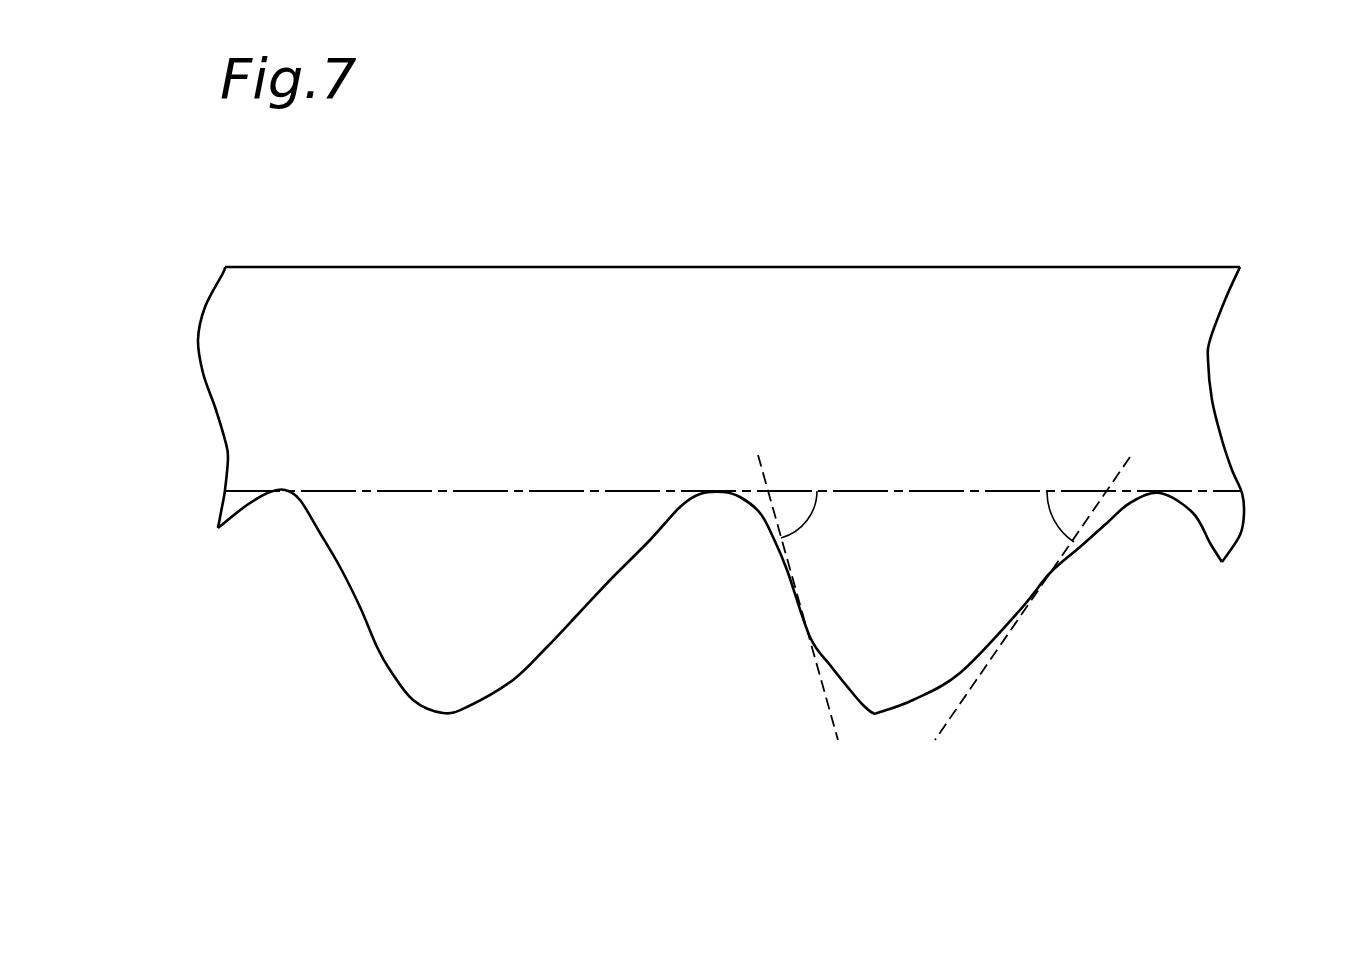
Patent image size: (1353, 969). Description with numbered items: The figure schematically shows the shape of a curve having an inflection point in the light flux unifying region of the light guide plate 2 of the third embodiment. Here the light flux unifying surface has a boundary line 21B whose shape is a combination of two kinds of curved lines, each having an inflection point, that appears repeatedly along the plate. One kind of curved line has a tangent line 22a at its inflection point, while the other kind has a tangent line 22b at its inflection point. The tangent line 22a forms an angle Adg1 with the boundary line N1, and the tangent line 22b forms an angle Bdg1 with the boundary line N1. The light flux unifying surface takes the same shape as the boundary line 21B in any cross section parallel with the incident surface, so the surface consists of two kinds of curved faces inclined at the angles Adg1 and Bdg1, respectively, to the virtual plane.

The light guide plate 2 is at (707, 312).
The boundary line 21B is at (377, 648).
The boundary line N1 is at (338, 490).
The tangent line 22b is at (762, 468).
The tangent line 22a is at (1123, 467).
The angle Bdg1 is at (844, 521).
The angle Adg1 is at (1017, 521).